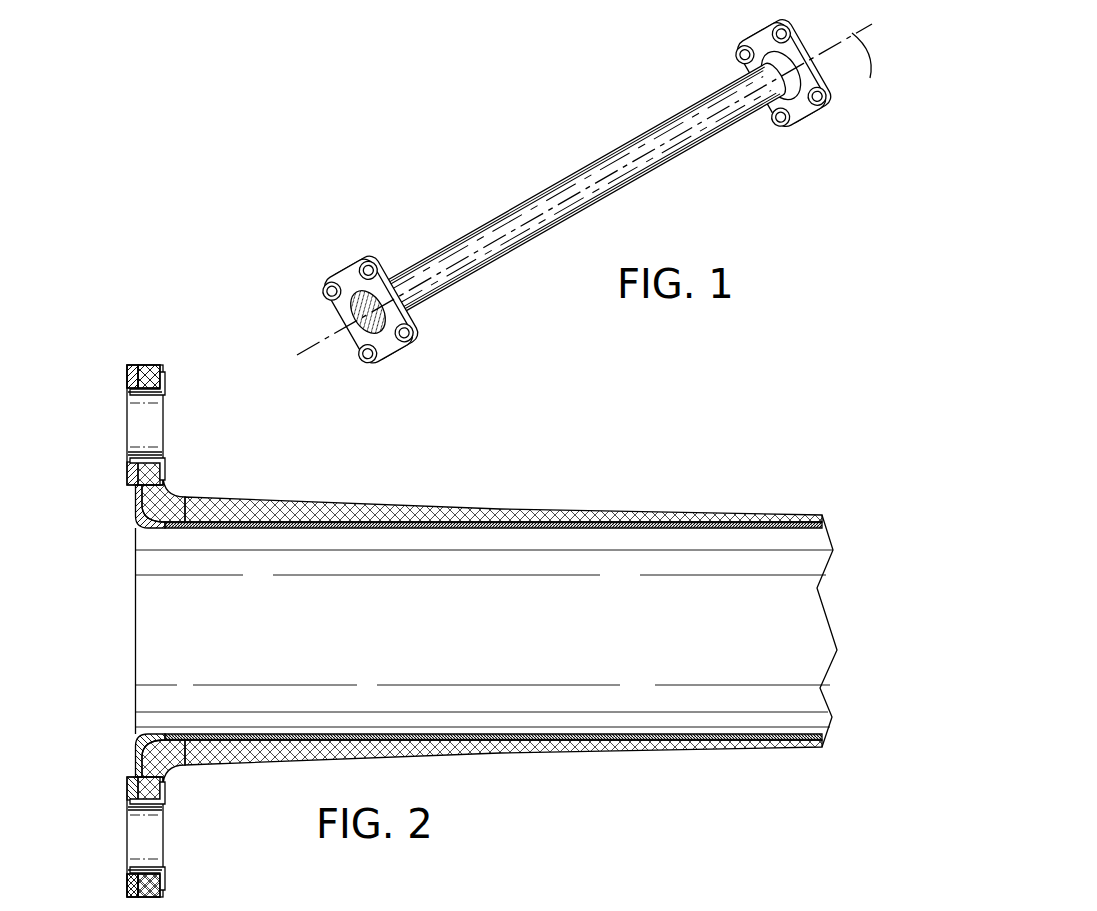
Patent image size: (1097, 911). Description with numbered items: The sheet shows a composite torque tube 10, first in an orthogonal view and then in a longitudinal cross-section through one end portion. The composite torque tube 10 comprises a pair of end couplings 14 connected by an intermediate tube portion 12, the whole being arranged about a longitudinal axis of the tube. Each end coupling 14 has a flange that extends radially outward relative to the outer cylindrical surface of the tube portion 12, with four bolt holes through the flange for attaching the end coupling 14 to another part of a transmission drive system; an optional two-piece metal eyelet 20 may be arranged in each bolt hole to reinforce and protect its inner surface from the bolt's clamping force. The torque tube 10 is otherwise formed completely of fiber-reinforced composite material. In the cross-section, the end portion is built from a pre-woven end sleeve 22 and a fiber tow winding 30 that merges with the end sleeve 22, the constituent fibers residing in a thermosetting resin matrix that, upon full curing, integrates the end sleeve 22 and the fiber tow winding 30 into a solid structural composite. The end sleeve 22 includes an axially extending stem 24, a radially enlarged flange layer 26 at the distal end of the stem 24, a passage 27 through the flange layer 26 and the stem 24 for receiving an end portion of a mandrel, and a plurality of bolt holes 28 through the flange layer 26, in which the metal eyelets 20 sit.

In FIG. 1, the composite torque tube 10 is at (440, 132).
In FIG. 1, the intermediate tube portion 12 is at (585, 165).
In FIG. 2, the end coupling 14 is at (236, 432).
In FIG. 2, the two-piece metal eyelet 20 is at (165, 386).
In FIG. 2, the pre-woven end sleeve 22 is at (122, 520).
In FIG. 2, the stem 24 is at (287, 523).
In FIG. 2, the flange layer 26 is at (140, 368).
In FIG. 2, the passage 27 is at (200, 527).
In FIG. 2, the bolt hole 28 is at (130, 390).
In FIG. 2, the fiber tow winding 30 is at (405, 515).